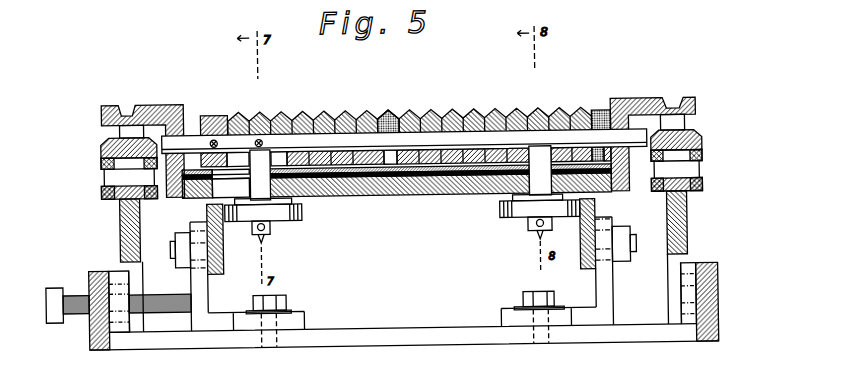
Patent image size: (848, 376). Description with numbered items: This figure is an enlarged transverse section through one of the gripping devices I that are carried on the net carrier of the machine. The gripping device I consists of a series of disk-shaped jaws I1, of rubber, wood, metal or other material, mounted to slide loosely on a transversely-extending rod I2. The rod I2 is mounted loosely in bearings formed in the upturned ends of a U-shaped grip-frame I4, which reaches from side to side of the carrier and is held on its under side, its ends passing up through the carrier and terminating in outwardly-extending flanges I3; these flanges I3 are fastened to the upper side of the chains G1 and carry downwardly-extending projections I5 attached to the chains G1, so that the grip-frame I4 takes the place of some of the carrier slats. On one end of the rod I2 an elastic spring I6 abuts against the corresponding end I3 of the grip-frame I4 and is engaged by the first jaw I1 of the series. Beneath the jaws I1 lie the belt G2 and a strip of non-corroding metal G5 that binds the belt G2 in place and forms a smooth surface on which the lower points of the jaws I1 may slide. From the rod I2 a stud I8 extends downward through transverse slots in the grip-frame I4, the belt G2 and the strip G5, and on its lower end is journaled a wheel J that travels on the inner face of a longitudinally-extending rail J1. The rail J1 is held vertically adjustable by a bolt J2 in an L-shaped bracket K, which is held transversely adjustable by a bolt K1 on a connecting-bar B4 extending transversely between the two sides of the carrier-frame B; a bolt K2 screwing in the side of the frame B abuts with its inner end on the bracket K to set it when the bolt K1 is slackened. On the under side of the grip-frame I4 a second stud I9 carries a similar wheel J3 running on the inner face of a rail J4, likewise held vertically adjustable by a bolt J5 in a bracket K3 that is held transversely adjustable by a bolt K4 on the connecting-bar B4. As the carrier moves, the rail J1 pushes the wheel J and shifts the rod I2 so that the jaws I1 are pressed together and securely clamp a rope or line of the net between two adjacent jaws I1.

The gripping device I is at (409, 106).
The jaws I1 is at (220, 111).
The rod I2 is at (359, 133).
The flanges I3 is at (170, 103).
The grip-frame I4 is at (362, 196).
The downwardly-extending projections I5 is at (121, 134).
The spring I6 is at (599, 112).
The stud I8 is at (260, 196).
The stud I9 is at (529, 227).
The chains G1 is at (103, 196).
The belt G2 is at (447, 196).
The strip of non-corroding metal G5 is at (407, 196).
The wheel J is at (268, 233).
The rail J1 is at (222, 266).
The bolt J2 is at (172, 245).
The wheel J3 is at (504, 210).
The rail J4 is at (582, 238).
The bolt J5 is at (631, 241).
The L-shaped bracket K is at (213, 305).
The bolt K1 is at (270, 296).
The bolt K2 is at (50, 315).
The bracket K3 is at (616, 300).
The bolt K4 is at (526, 296).
The carrier-frame B is at (100, 265).
The connecting-bar B4 is at (408, 331).